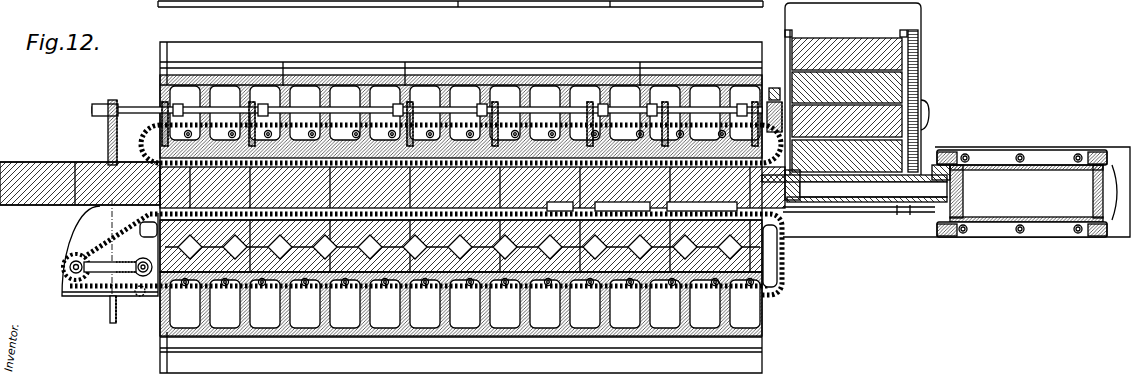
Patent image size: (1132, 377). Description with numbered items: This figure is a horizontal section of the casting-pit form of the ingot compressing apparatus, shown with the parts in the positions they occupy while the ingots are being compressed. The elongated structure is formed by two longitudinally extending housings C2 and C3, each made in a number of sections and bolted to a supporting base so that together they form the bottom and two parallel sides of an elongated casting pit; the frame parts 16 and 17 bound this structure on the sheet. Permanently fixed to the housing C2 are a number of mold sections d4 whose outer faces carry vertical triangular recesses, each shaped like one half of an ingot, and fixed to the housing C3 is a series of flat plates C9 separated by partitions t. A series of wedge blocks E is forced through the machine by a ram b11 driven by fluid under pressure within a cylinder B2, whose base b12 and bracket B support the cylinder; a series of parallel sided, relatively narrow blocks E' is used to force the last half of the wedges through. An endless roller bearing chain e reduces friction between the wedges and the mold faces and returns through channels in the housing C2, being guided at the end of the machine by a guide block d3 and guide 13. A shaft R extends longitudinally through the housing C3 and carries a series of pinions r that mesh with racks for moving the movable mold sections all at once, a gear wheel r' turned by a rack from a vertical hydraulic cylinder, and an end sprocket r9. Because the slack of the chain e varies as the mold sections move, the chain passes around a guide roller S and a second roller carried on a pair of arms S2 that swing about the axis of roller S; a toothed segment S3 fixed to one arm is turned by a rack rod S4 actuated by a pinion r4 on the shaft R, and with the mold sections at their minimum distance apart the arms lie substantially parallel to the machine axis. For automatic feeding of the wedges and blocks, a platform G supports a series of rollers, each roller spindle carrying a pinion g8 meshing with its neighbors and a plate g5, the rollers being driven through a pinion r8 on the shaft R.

The upper frame bar 16 is at (375, 8).
The casing frame 17 is at (283, 51).
The longitudinally extending housing C3 is at (338, 79).
The partition t is at (467, 74).
The flat plate C9 is at (204, 146).
The shaft R is at (546, 111).
The pinion r is at (460, 119).
The gear wheel r' is at (455, 141).
The pinion r4 is at (108, 104).
The rack rod S4 is at (111, 152).
The end sprocket r9 is at (763, 103).
The pinion r8 is at (773, 88).
The wedge block E is at (392, 175).
The mold section d4 is at (256, 270).
The endless roller bearing chain e is at (97, 239).
The chain guide 13 is at (790, 253).
The bracket B is at (60, 277).
The guide roller S is at (98, 273).
The arm S2 is at (110, 300).
The toothed segment S3 is at (140, 296).
The guide block d3 is at (790, 242).
The longitudinally extending housing C2 is at (512, 368).
The hopper casing G is at (912, 22).
The parallel sided block E' is at (858, 125).
The pinion g8 is at (926, 101).
The plate g5 is at (794, 132).
The base strip b12 is at (854, 186).
The ram b11 is at (859, 220).
The cylinder B2 is at (1040, 230).